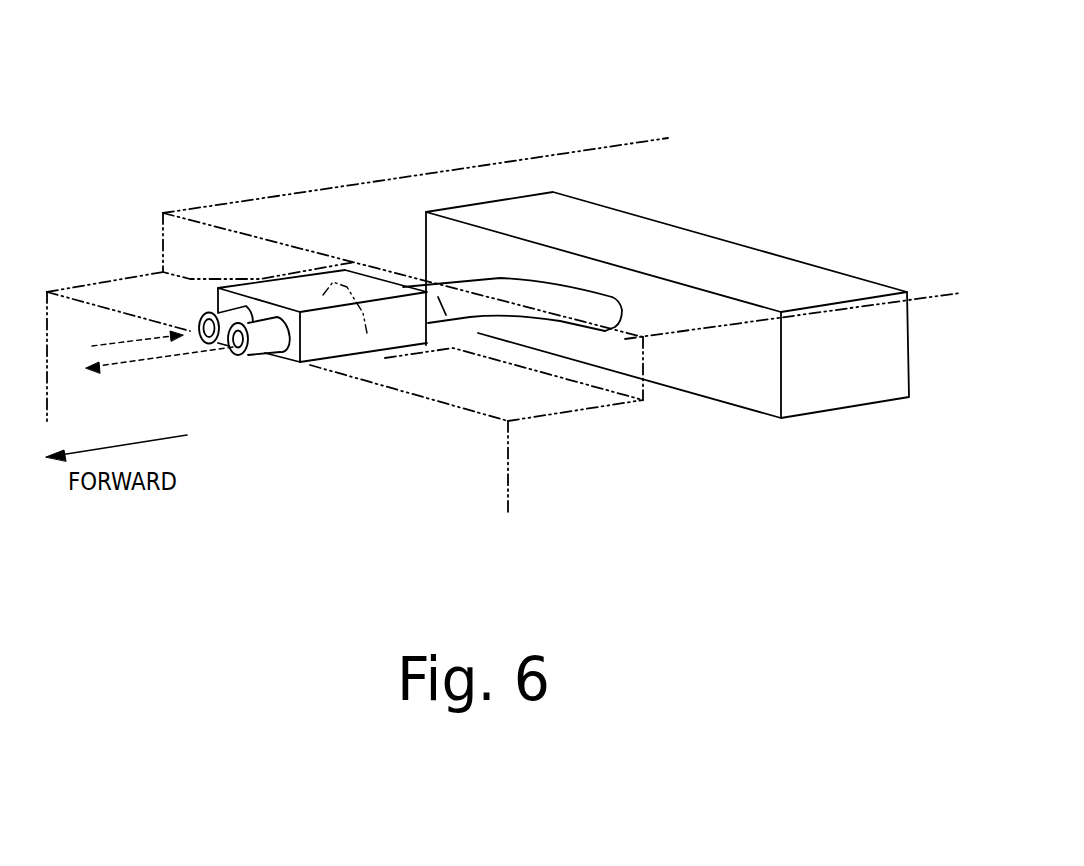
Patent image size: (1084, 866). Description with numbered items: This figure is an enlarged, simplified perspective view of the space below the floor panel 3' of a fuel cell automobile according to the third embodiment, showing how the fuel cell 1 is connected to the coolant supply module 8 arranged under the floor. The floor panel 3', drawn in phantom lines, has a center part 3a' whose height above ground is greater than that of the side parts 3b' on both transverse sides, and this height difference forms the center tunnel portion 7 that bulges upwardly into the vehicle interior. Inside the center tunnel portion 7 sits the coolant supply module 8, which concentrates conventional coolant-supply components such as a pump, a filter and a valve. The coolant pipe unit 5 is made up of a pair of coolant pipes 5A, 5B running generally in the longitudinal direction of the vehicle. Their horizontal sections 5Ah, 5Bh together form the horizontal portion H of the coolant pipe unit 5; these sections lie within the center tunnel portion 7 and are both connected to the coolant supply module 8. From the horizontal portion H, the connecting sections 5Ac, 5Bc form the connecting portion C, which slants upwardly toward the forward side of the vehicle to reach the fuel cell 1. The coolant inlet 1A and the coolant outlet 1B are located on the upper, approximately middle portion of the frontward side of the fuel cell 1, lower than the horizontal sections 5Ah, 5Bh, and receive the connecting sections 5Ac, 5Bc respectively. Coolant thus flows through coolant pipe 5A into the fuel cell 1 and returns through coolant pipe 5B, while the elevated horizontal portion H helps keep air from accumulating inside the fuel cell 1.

The fuel cell 1 is at (693, 230).
The coolant inlet 1A is at (583, 297).
The coolant outlet 1B is at (621, 312).
The floor panel 3' is at (415, 150).
The center part of the floor panel 3a' is at (345, 350).
The side parts of the floor panel 3b' is at (503, 354).
The coolant pipe unit 5 is at (110, 77).
The coolant pipe 5A is at (217, 307).
The coolant pipe 5B is at (258, 327).
The horizontal section of coolant pipe 5A 5Ah is at (410, 235).
The horizontal section of coolant pipe 5B 5Bh is at (425, 213).
The connecting section of coolant pipe 5A 5Ac is at (598, 313).
The connecting section of coolant pipe 5B 5Bc is at (597, 294).
The center tunnel portion 7 is at (305, 292).
The coolant supply module 8 is at (290, 352).
The horizontal portion H is at (307, 67).
The connecting portion C is at (585, 70).